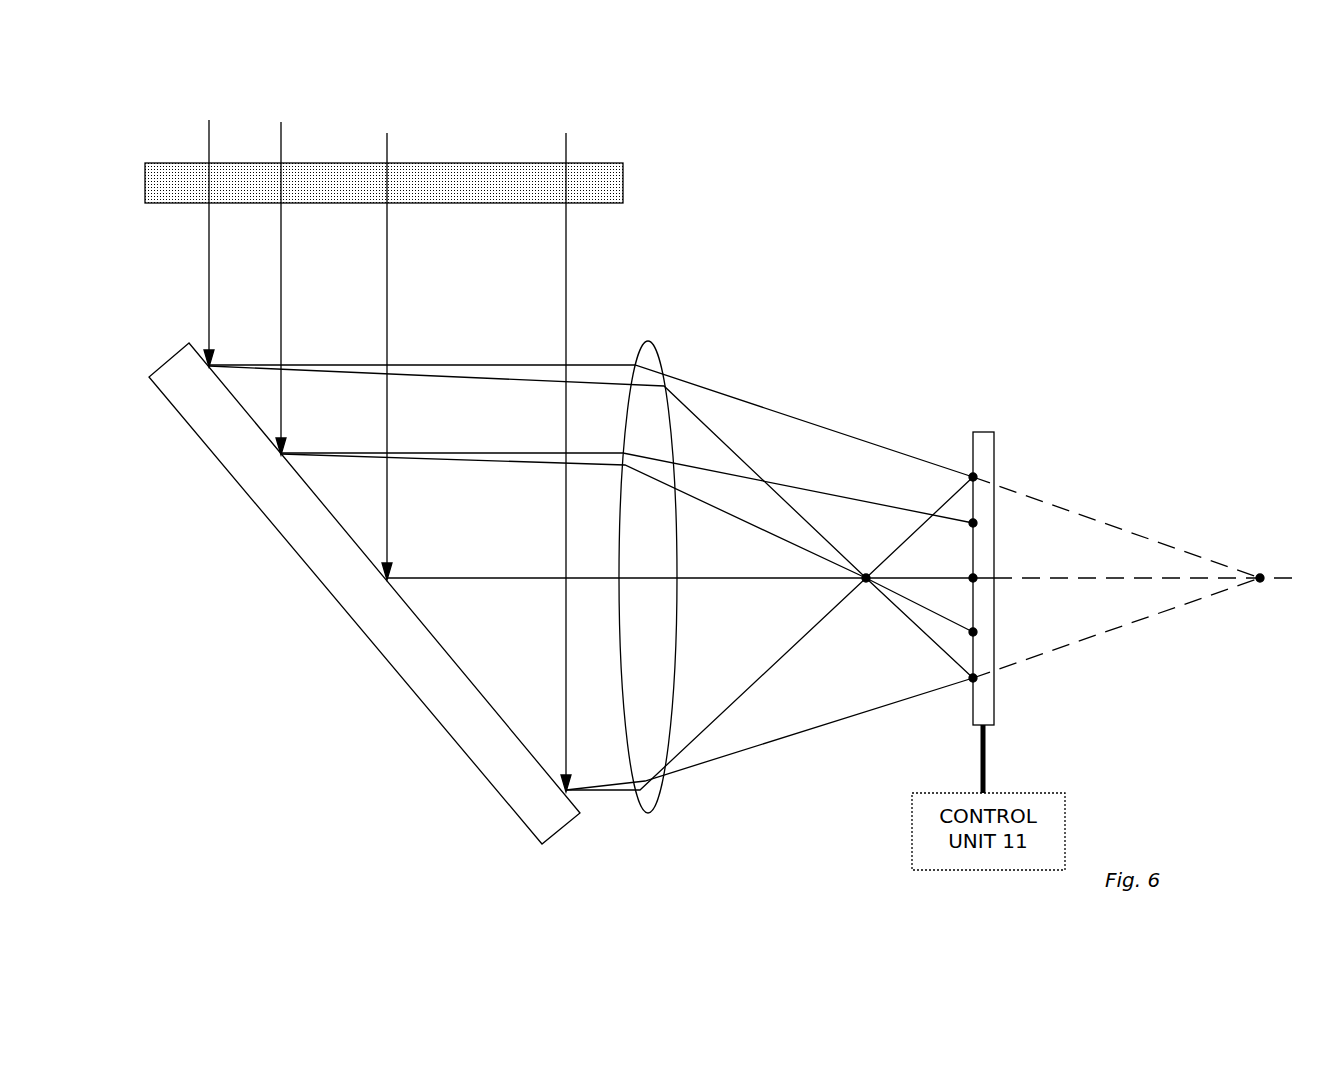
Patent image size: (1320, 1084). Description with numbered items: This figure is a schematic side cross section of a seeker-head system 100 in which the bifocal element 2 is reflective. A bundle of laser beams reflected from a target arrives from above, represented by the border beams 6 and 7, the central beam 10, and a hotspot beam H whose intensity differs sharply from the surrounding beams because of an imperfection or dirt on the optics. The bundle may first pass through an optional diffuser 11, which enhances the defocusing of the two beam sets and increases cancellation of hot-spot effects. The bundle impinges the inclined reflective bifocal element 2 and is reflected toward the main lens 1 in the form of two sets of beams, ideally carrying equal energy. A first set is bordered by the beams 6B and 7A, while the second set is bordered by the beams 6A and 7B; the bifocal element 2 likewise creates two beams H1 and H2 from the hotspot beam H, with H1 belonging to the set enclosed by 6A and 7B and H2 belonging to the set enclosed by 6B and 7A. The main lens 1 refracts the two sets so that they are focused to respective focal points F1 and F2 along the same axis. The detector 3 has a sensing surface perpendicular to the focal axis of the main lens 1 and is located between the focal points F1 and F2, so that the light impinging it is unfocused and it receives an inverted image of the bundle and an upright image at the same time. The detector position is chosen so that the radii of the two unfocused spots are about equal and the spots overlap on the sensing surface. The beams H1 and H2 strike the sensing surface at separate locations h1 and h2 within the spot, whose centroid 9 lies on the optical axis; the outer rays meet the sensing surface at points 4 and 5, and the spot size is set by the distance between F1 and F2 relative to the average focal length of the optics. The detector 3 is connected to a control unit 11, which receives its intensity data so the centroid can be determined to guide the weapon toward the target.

The optical system 100 is at (1140, 292).
The diffuser 11 is at (623, 180).
The beam 6 is at (209, 300).
The hotspot beam H is at (281, 415).
The central beam 10 is at (387, 535).
The beam 7 is at (566, 713).
The bifocal element 2 is at (395, 668).
The main lens 1 is at (661, 340).
The beam 6A is at (618, 365).
The beam 6B is at (450, 373).
The first beam H1 is at (608, 450).
The second beam H2 is at (530, 462).
The beam 7A is at (620, 777).
The beam 7B is at (590, 797).
The detector 3 is at (988, 430).
The detector point 4 is at (975, 477).
The location h1 is at (975, 523).
The centroid 9 is at (975, 578).
The location h2 is at (975, 632).
The detector point 5 is at (975, 678).
The focal point F1 is at (868, 580).
The focal point F2 is at (1260, 582).